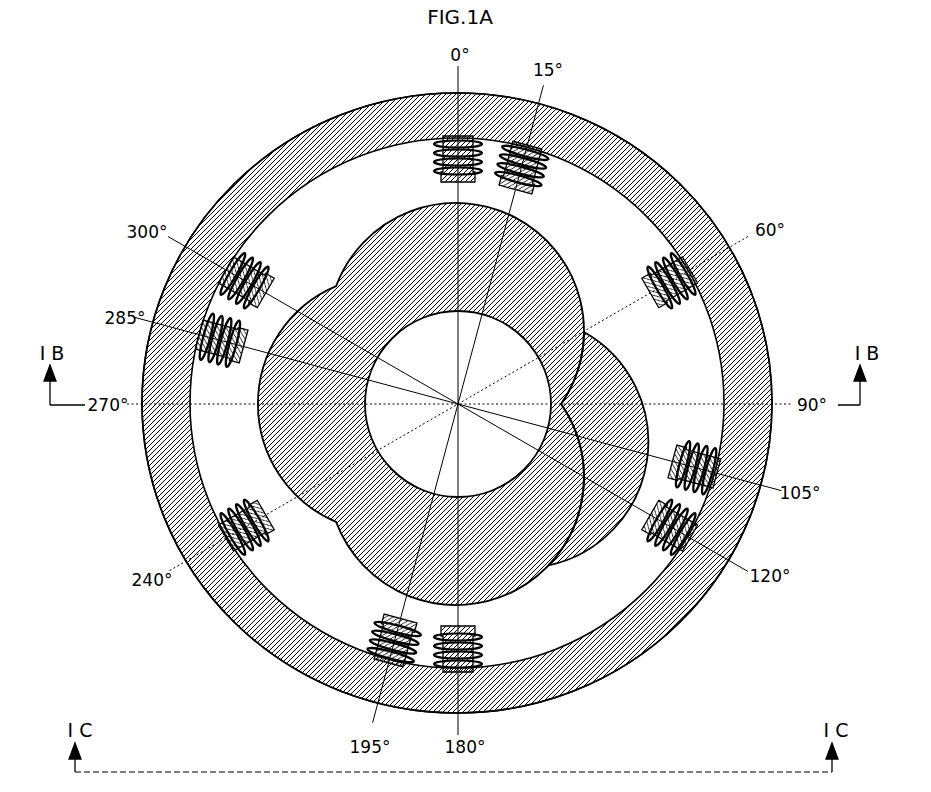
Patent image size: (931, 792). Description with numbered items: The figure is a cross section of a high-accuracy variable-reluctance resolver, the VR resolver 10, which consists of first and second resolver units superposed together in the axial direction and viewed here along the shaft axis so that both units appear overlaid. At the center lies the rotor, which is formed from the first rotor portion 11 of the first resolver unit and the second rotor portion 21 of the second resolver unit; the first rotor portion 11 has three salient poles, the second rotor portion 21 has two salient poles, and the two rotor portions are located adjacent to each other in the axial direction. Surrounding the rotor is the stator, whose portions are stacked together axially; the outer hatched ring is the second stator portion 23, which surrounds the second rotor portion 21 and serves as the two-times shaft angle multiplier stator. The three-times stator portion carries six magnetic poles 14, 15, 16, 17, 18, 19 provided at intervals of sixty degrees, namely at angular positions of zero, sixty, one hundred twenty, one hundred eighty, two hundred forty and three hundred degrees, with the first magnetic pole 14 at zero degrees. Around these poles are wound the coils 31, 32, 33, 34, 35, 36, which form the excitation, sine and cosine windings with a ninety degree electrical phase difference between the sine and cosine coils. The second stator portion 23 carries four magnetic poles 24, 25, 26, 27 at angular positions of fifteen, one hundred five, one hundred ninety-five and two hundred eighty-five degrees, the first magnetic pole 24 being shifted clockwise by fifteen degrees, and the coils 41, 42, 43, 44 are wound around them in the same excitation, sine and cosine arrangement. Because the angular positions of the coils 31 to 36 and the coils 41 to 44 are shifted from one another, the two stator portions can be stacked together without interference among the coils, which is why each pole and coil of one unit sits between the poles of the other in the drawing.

The VR resolver 10 is at (239, 177).
The first rotor portion 11 is at (640, 393).
The first magnetic pole 14 is at (440, 176).
The magnetic pole 15 is at (690, 317).
The magnetic pole 16 is at (653, 540).
The magnetic pole 17 is at (473, 628).
The magnetic pole 18 is at (216, 492).
The magnetic pole 19 is at (250, 232).
The second rotor portion 21 is at (365, 243).
The second stator portion 23 is at (698, 202).
The first magnetic pole 24 is at (534, 190).
The magnetic pole 25 is at (702, 440).
The magnetic pole 26 is at (374, 631).
The magnetic pole 27 is at (222, 368).
The coil 31 is at (432, 140).
The coil 32 is at (690, 290).
The coil 33 is at (682, 548).
The coil 34 is at (476, 636).
The coil 35 is at (238, 532).
The coil 36 is at (217, 288).
The coil 41 is at (548, 150).
The coil 42 is at (707, 497).
The coil 43 is at (397, 645).
The coil 44 is at (193, 355).